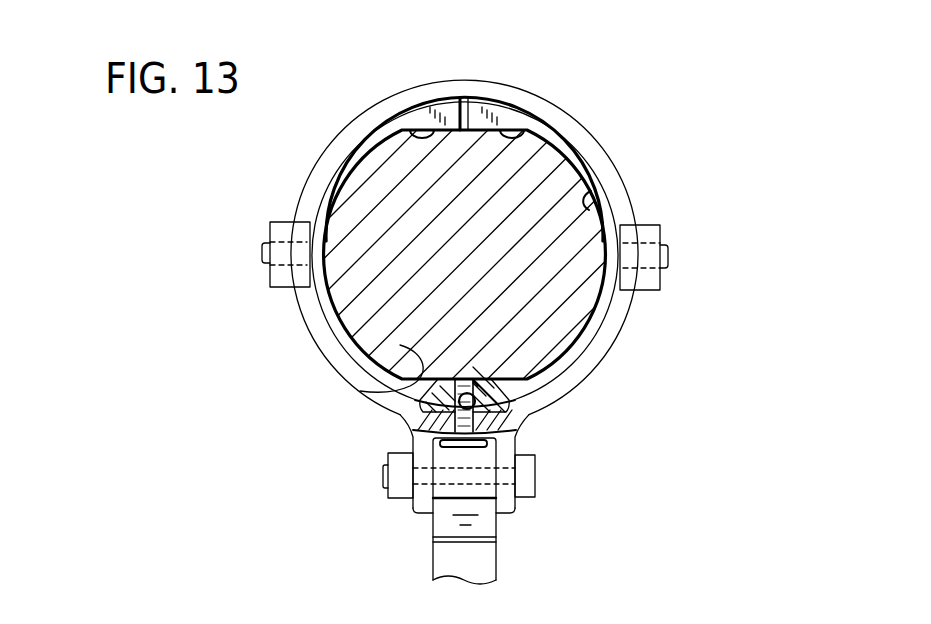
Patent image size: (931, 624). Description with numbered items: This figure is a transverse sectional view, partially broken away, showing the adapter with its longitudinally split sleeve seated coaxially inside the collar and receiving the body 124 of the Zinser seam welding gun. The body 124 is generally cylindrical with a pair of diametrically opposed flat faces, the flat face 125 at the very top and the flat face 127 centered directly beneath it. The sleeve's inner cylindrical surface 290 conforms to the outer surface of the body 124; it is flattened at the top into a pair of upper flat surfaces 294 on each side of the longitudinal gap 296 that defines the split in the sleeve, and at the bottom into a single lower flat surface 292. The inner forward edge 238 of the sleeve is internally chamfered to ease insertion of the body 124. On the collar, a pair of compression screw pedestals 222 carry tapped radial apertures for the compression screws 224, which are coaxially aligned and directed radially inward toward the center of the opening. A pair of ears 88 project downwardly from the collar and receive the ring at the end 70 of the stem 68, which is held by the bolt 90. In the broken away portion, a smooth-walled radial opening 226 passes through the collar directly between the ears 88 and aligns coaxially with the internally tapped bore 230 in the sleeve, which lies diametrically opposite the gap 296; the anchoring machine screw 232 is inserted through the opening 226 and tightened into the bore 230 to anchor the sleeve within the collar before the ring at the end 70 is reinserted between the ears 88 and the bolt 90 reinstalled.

The stem 68 is at (482, 563).
The end of the stem 70 is at (443, 460).
The ears 88 is at (424, 509).
The bolt 90 is at (535, 488).
The body 124 is at (601, 175).
The flat face 125 is at (478, 130).
The flat face 127 is at (402, 379).
The compression screw pedestals 222 is at (270, 234).
The compression screws 224 is at (262, 258).
The radial opening 226 is at (412, 415).
The threaded bore 230 is at (521, 417).
The anchoring machine screw 232 is at (470, 450).
The inner forward edge 238 is at (590, 340).
The inner cylindrical surface 290 is at (593, 199).
The lower flat surface 292 is at (400, 345).
The upper flat surfaces 294 is at (409, 128).
The longitudinal gap 296 is at (469, 97).